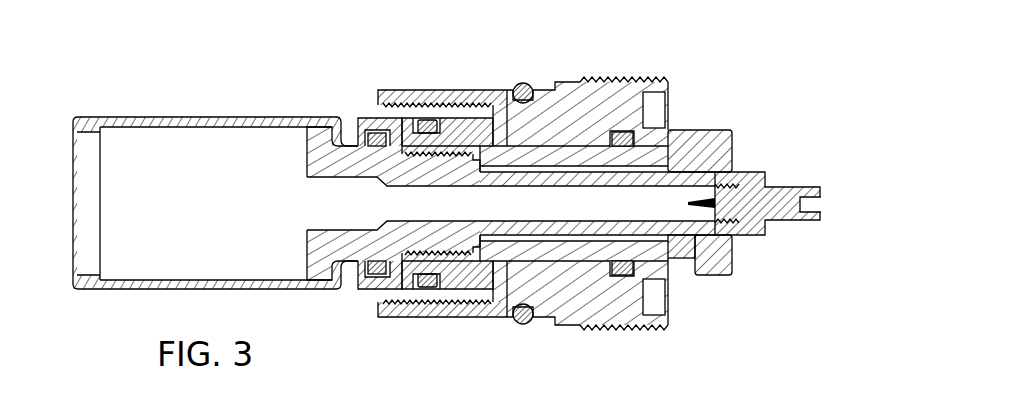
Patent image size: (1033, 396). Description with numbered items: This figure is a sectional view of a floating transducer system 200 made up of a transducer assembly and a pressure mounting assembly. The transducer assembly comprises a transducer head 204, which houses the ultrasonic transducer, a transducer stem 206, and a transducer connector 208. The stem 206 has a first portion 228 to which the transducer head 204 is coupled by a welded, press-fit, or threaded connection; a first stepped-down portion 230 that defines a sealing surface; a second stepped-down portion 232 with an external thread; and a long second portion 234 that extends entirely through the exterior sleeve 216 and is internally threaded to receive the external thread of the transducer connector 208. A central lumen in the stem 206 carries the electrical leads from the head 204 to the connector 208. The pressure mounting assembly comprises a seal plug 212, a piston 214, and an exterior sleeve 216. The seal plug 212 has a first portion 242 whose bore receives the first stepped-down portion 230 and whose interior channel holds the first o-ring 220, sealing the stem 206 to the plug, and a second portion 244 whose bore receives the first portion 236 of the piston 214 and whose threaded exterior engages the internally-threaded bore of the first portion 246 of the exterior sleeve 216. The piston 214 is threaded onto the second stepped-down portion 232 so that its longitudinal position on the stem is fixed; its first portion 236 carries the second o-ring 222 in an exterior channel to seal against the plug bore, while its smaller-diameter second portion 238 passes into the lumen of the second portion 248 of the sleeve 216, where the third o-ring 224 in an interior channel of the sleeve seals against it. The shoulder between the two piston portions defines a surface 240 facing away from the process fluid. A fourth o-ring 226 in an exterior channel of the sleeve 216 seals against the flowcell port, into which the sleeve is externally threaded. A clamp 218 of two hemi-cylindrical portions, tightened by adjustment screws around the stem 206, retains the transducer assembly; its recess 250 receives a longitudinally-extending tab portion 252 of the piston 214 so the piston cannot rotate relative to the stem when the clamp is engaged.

The floating transducer system 200 is at (447, 204).
The transducer head 204 is at (150, 117).
The transducer stem 206 is at (300, 247).
The transducer connector 208 is at (755, 198).
The seal plug 212 is at (353, 143).
The piston 214 is at (510, 157).
The exterior sleeve 216 is at (617, 300).
The clamp 218 is at (717, 150).
The first o-ring 220 is at (372, 286).
The second o-ring 222 is at (425, 298).
The third o-ring 224 is at (618, 140).
The fourth o-ring 226 is at (530, 318).
The first portion of the transducer stem 228 is at (313, 152).
The first stepped-down portion of the transducer stem 230 is at (352, 147).
The second stepped-down portion of the transducer stem 232 is at (455, 107).
The second portion of the transducer stem 234 is at (690, 180).
The first portion of the piston 236 is at (465, 262).
The second portion of the piston 238 is at (627, 262).
The shoulder surface 240 is at (488, 265).
The first portion of the seal plug 242 is at (334, 272).
The second portion of the seal plug 244 is at (447, 303).
The first portion of the exterior sleeve 246 is at (383, 120).
The second portion of the exterior sleeve 248 is at (567, 120).
The recess 250 is at (707, 243).
The tab portion 252 is at (690, 243).